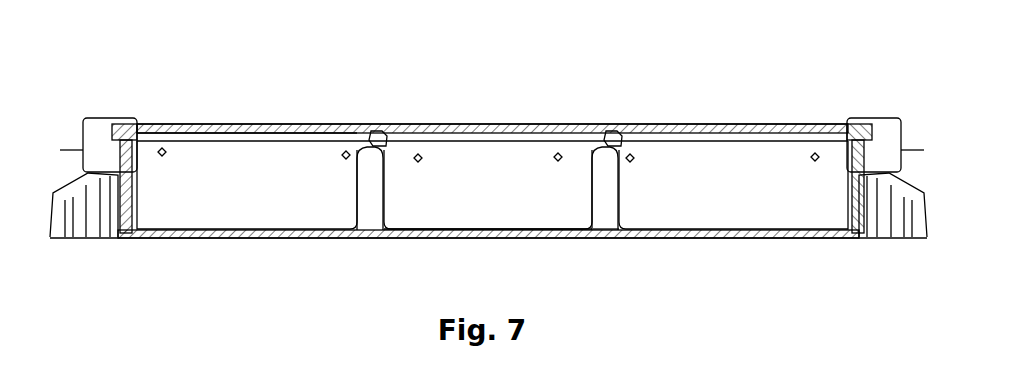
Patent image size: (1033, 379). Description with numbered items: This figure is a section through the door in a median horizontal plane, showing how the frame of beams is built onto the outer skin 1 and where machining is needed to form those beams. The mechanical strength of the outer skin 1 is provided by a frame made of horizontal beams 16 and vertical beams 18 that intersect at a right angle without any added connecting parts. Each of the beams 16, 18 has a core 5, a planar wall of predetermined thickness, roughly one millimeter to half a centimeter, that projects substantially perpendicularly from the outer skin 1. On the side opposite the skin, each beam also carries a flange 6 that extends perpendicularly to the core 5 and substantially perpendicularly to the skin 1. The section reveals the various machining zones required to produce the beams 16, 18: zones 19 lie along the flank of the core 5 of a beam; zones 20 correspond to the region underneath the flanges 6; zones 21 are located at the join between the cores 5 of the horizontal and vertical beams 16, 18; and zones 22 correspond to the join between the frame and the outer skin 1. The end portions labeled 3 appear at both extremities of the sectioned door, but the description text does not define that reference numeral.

The outer skin 1 is at (706, 240).
The end piece / foot 3 is at (83, 148).
The core 5 is at (478, 187).
The flange 6 is at (295, 124).
The horizontal beam 16 is at (650, 121).
The vertical beam 18 is at (384, 123).
The machining zone at the flank of the core 19 is at (253, 190).
The machining zone underneath the flanges 20 is at (685, 143).
The machining zone at the join between cores 21 is at (608, 203).
The machining zone at the join between frame and skin 22 is at (497, 230).